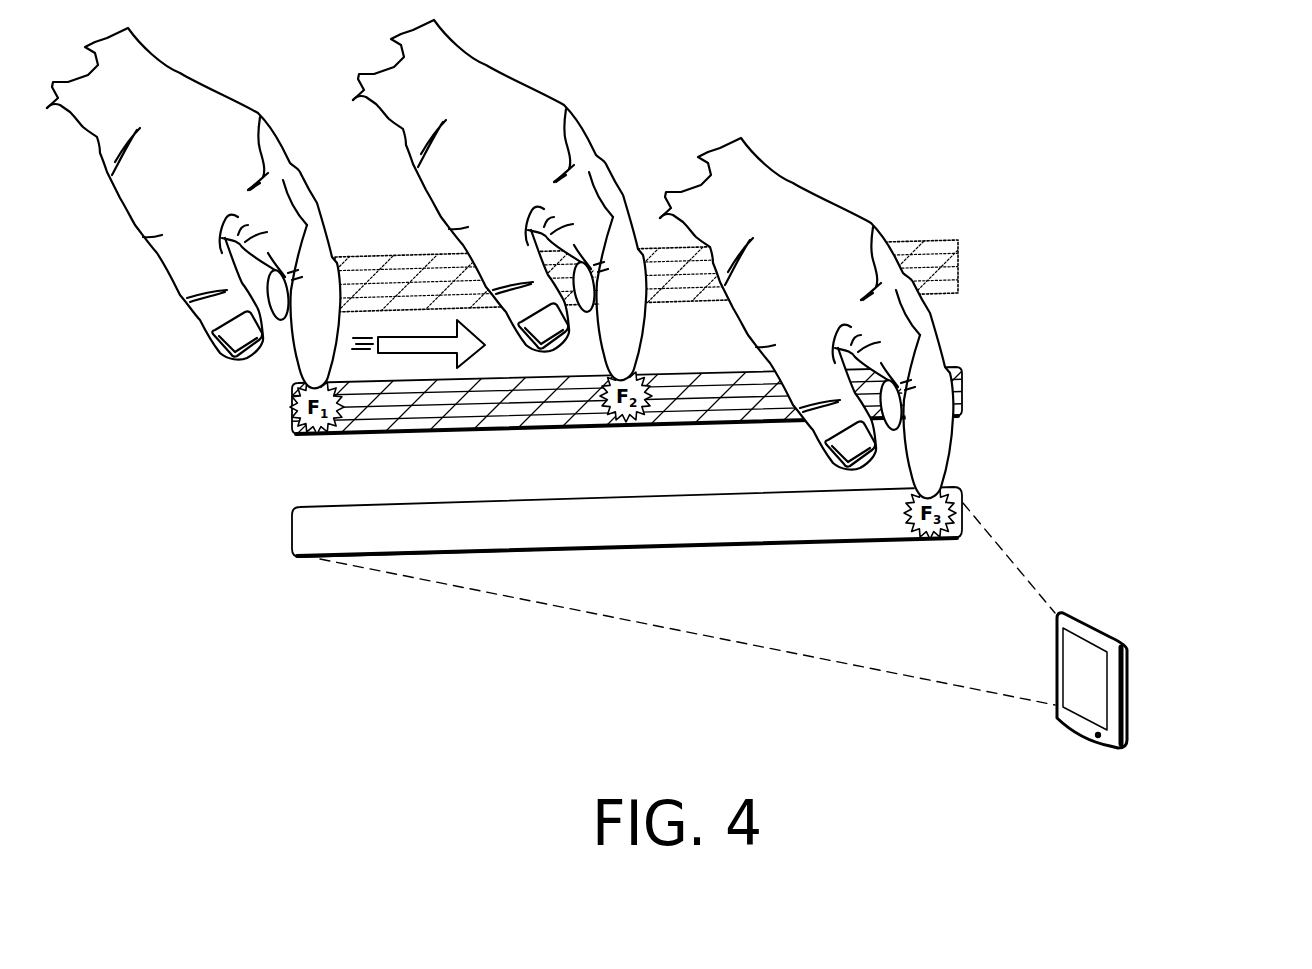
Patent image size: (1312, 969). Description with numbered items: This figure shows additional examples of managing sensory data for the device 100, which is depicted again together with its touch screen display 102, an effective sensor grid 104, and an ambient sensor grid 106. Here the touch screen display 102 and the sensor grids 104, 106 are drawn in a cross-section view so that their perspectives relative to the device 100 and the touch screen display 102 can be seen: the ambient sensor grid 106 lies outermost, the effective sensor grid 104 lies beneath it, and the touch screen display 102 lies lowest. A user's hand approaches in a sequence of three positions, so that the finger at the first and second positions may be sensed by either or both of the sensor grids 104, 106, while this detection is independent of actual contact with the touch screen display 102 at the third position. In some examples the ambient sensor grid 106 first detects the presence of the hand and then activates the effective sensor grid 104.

The device 100 is at (1125, 644).
The touch screen display 102 is at (963, 497).
The effective sensor grid 104 is at (960, 368).
The ambient sensor grid 106 is at (958, 244).